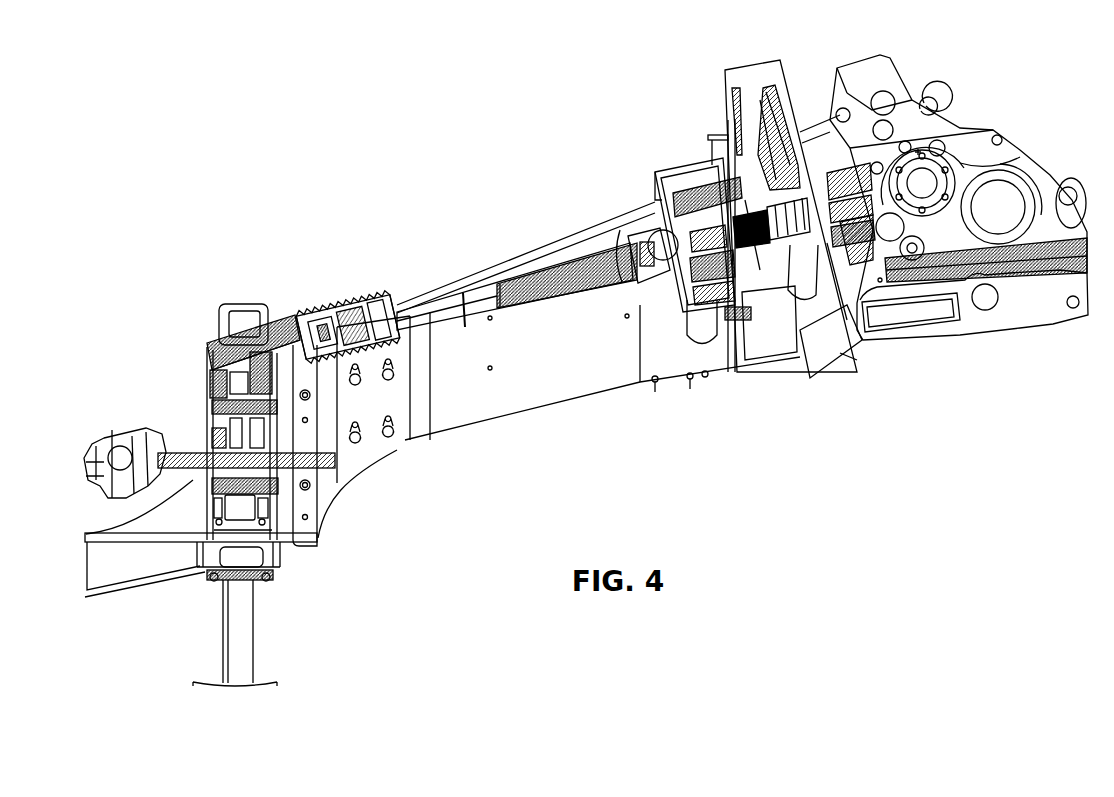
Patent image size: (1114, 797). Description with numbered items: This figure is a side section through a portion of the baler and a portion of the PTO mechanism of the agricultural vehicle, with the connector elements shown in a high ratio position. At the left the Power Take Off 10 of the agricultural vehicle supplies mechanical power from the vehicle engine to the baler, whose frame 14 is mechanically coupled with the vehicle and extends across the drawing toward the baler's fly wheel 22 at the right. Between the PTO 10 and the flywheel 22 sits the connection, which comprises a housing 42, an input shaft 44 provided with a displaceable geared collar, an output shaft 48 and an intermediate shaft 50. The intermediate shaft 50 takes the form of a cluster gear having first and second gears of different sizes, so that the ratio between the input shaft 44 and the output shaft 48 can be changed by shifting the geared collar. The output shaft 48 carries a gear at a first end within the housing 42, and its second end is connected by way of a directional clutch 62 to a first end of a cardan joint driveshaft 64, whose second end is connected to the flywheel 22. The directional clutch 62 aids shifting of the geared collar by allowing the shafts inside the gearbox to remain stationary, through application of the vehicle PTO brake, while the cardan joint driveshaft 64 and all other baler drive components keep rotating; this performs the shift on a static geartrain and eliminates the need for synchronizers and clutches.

The Power Take Off 10 is at (115, 420).
The frame 14 is at (585, 378).
The fly wheel 22 is at (747, 78).
The housing 42 is at (239, 306).
The input shaft 44 is at (320, 460).
The output shaft 48 is at (233, 352).
The intermediate shaft 50 is at (223, 399).
The directional clutch 62 is at (324, 298).
The cardan joint driveshaft 64 is at (526, 282).